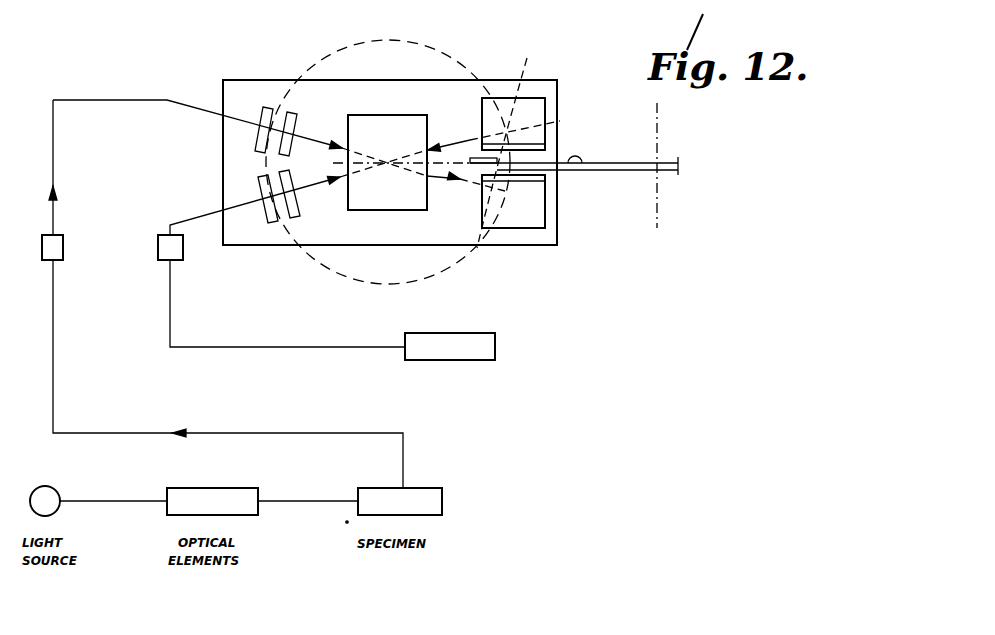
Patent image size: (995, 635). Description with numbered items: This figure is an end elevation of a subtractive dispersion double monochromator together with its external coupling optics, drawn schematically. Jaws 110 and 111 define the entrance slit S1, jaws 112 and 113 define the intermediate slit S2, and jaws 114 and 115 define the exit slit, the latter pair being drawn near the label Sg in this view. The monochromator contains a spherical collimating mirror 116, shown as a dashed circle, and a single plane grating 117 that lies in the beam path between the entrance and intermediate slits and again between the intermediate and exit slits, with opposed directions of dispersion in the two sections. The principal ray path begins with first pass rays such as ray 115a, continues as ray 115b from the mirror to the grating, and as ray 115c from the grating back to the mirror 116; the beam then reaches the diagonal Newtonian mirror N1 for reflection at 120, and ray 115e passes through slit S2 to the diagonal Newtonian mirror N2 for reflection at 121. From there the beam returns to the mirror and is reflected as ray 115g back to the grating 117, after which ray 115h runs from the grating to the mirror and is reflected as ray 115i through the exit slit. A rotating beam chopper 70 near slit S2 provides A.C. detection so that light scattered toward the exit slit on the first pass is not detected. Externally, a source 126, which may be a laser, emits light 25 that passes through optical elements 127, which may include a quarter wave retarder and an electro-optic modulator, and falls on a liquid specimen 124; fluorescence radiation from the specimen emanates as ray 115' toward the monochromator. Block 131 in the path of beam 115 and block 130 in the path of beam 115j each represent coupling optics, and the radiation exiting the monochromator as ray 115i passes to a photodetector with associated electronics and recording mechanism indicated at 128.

The jaw 110 is at (256, 132).
The jaw 111 is at (262, 164).
The jaw 114 is at (262, 177).
The jaw / ray 115 is at (315, 205).
The first pass ray 115a is at (286, 110).
The ray 115b is at (300, 150).
The ray 115c is at (448, 178).
The ray 115e is at (557, 160).
The ray 115g is at (468, 137).
The ray 115h is at (313, 192).
The ray 115i is at (288, 223).
The ray or beam 115j is at (170, 318).
The ray 115' is at (226, 294).
The spherical collimating mirror 116 is at (482, 85).
The single plane grating 117 is at (400, 115).
The jaw 112 is at (470, 180).
The jaw 113 is at (576, 171).
The reflection point 120 is at (497, 245).
The reflection point 121 is at (519, 147).
The liquid specimen 124 is at (427, 488).
The source 126 is at (56, 488).
The optical elements 127 is at (240, 488).
The photodetector and associated electronics and recording mechanism 128 is at (495, 346).
The block 130 is at (158, 246).
The block 131 is at (63, 250).
The rotating beam chopper 70 is at (678, 172).
The light 25 is at (300, 502).
The entrance slit S1 is at (258, 125).
The intermediate slit S2 is at (513, 201).
The south pole Sg is at (267, 223).
The diagonal Newtonian mirror N1 is at (545, 218).
The diagonal Newtonian mirror N2 is at (545, 118).